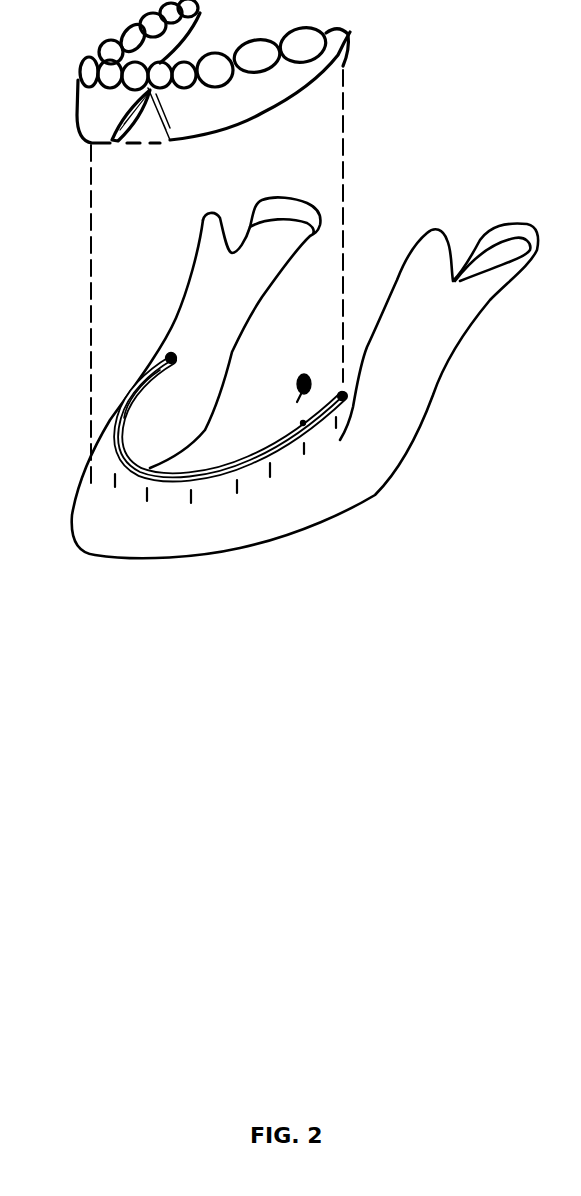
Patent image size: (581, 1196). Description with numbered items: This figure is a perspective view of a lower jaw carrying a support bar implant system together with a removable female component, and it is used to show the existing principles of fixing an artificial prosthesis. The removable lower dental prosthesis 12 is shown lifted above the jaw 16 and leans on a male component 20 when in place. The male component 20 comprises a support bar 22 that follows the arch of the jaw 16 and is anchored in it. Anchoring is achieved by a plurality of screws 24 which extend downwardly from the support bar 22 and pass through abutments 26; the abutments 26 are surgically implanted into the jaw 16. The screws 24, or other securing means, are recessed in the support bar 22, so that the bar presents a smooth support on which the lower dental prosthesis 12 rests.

The lower dental prosthesis 12 is at (322, 67).
The jaw 16 is at (308, 498).
The male component 20 is at (193, 480).
The support bar 22 is at (113, 413).
The screws 24 is at (313, 380).
The abutments 26 is at (280, 450).